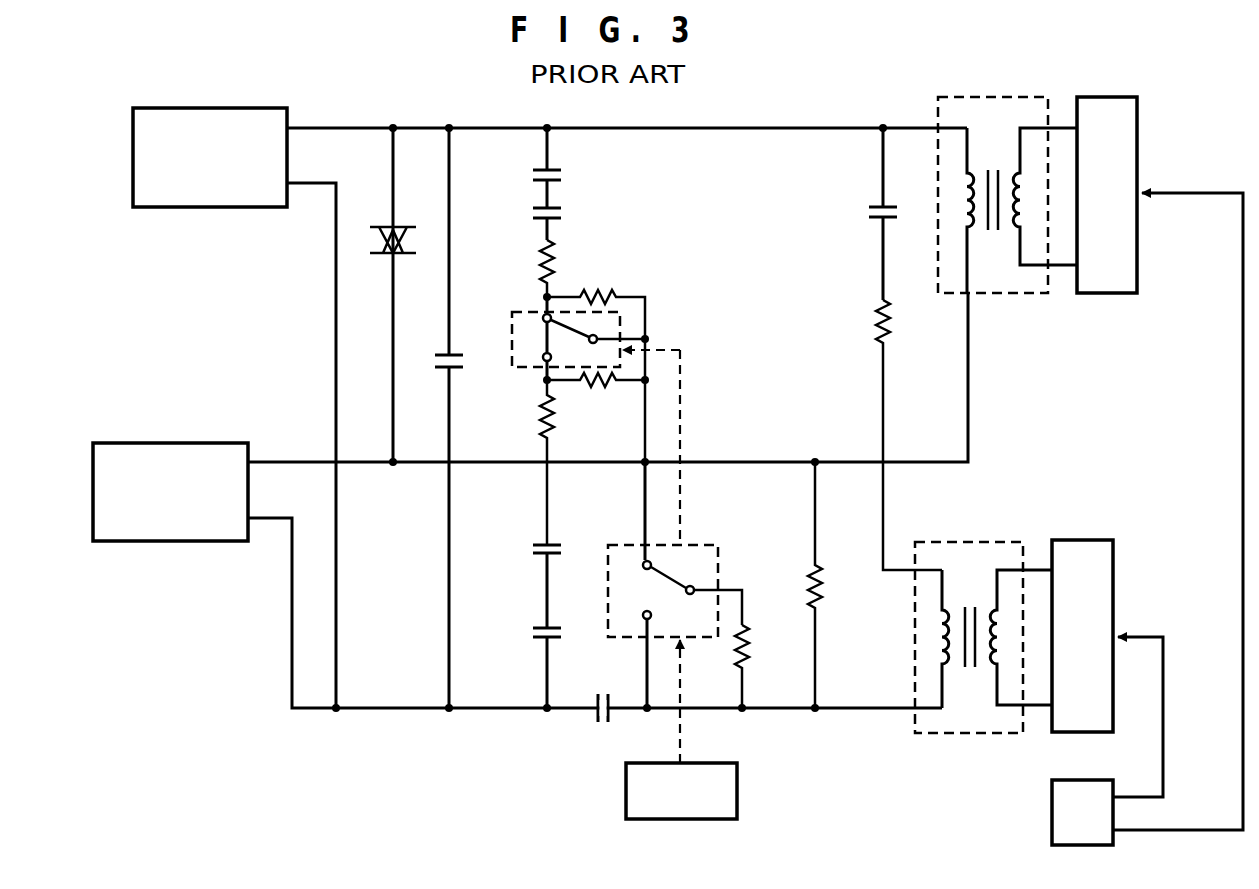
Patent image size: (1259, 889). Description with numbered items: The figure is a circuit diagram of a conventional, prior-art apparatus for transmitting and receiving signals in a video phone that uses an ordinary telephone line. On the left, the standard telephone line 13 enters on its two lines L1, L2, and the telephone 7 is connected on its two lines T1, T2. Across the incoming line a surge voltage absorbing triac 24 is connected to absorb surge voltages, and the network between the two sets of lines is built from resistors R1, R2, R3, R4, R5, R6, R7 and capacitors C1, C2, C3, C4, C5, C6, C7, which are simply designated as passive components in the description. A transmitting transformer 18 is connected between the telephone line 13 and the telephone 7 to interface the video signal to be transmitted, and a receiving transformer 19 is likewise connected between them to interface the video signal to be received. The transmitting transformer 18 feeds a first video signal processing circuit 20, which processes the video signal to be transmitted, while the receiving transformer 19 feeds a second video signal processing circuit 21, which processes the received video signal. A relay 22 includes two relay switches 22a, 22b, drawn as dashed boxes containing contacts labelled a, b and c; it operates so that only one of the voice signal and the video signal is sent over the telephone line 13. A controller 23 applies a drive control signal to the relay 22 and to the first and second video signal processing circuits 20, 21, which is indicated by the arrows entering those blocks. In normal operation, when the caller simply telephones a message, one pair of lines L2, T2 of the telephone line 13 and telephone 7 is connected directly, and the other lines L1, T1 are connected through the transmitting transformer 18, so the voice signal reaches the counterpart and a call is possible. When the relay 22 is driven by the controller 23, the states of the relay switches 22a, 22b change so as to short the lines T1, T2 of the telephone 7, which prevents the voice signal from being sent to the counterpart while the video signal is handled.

The standard telephone line 13 is at (205, 108).
The telephone 7 is at (168, 543).
The surge voltage absorbing triac 24 is at (393, 232).
The transmitting transformer 18 is at (1015, 97).
The receiving transformer 19 is at (988, 542).
The first video signal processing circuit 20 is at (1140, 136).
The second video signal processing circuit 21 is at (1116, 577).
The relay 22 is at (740, 790).
The relay switch 22a is at (640, 312).
The relay switch 22b is at (722, 563).
The controller 23 is at (1052, 814).
The line L1 is at (320, 128).
The line L2 is at (318, 183).
The line T1 is at (291, 462).
The line T2 is at (278, 518).
The capacitor C1 is at (568, 168).
The capacitor C2 is at (568, 219).
The capacitor C3 is at (435, 418).
The capacitor C4 is at (569, 581).
The capacitor C5 is at (569, 663).
The capacitor C6 is at (870, 214).
The capacitor C7 is at (609, 693).
The resistor R1 is at (533, 268).
The resistor R2 is at (596, 361).
The resistor R3 is at (596, 397).
The resistor R4 is at (532, 462).
The resistor R5 is at (765, 666).
The resistor R6 is at (836, 585).
The resistor R7 is at (909, 435).